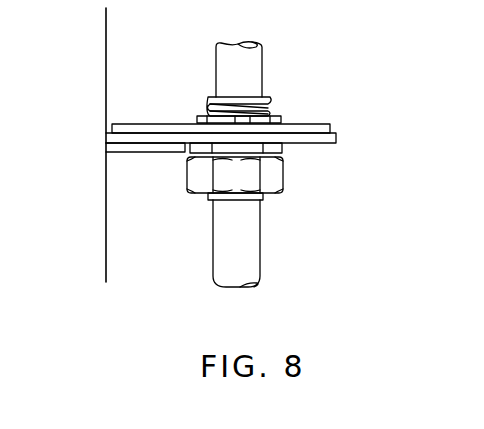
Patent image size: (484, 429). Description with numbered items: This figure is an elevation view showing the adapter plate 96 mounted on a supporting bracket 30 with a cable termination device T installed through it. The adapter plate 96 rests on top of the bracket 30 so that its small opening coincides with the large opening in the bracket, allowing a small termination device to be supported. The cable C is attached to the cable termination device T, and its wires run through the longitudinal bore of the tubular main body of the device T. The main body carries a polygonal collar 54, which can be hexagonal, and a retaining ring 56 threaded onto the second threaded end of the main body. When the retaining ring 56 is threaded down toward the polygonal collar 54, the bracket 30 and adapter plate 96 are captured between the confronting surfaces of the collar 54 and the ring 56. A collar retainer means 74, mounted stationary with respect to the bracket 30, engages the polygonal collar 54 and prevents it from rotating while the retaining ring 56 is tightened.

The adapter plate 96 is at (321, 127).
The supporting bracket 30 is at (335, 143).
The collar retainer means 74 is at (142, 150).
The retaining ring 56 is at (280, 119).
The polygonal collar 54 is at (283, 151).
The cable termination device T is at (176, 199).
The cable C is at (248, 247).